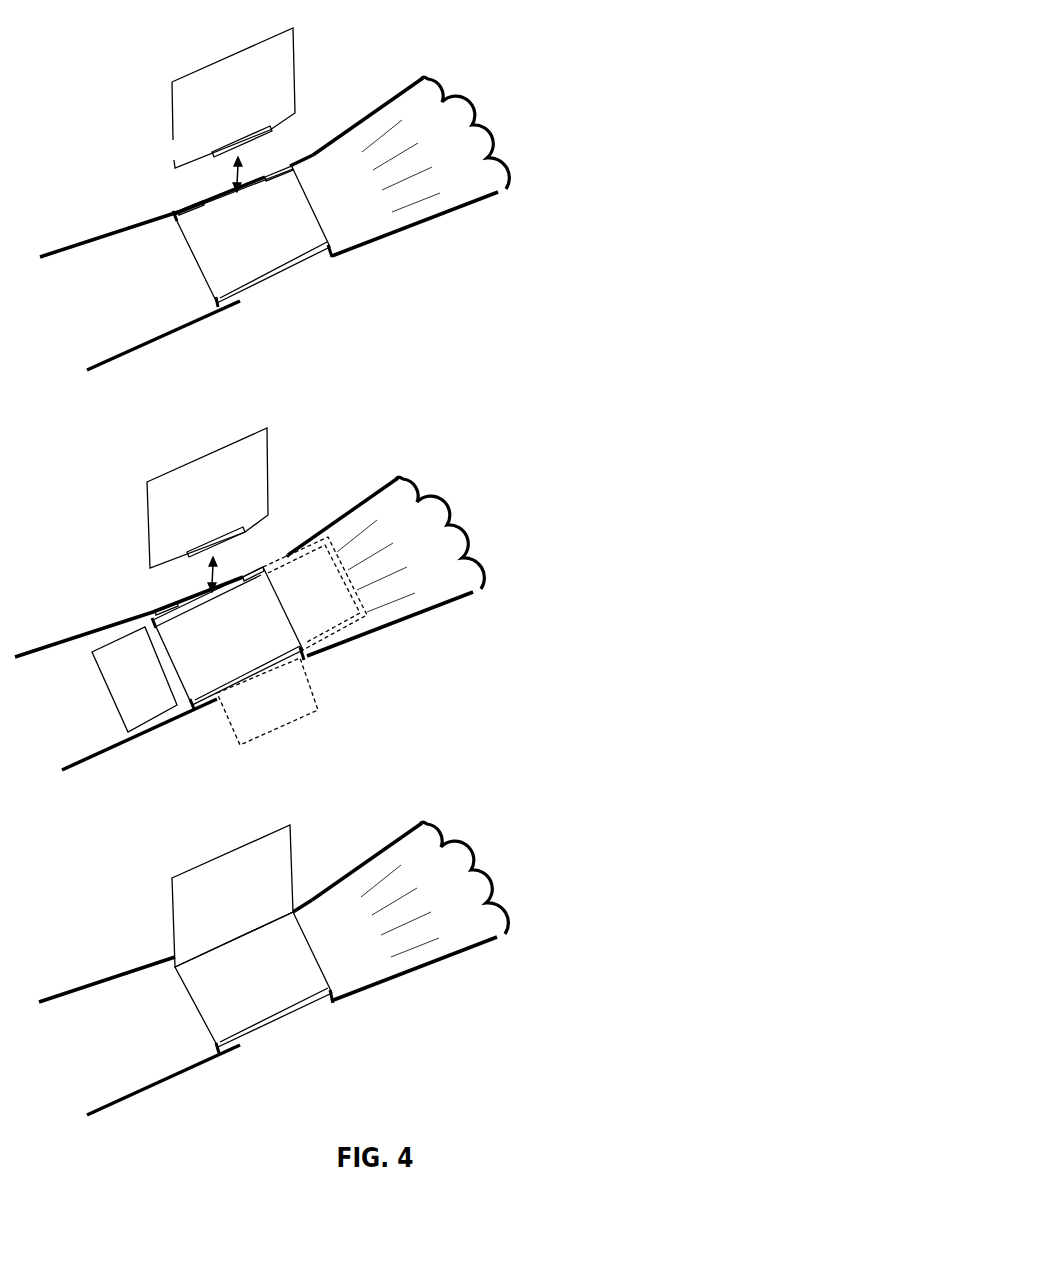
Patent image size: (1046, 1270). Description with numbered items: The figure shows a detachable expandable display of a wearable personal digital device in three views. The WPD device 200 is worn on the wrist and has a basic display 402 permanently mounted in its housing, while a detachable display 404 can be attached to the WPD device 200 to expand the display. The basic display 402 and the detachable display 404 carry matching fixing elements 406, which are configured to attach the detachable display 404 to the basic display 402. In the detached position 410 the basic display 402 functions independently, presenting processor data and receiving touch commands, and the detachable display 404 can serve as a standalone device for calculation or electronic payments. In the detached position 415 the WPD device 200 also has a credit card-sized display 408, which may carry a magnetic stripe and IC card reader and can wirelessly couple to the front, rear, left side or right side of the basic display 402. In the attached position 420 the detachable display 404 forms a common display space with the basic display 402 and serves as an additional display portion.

The WPD device 200 is at (200, 270).
The basic display 402 is at (272, 248).
The detachable display 404 is at (230, 72).
The fixing elements 406 is at (222, 157).
The credit card-sized display 408 is at (117, 653).
The detached position 410 is at (585, 213).
The detached position 415 is at (557, 611).
The attached position 420 is at (589, 958).